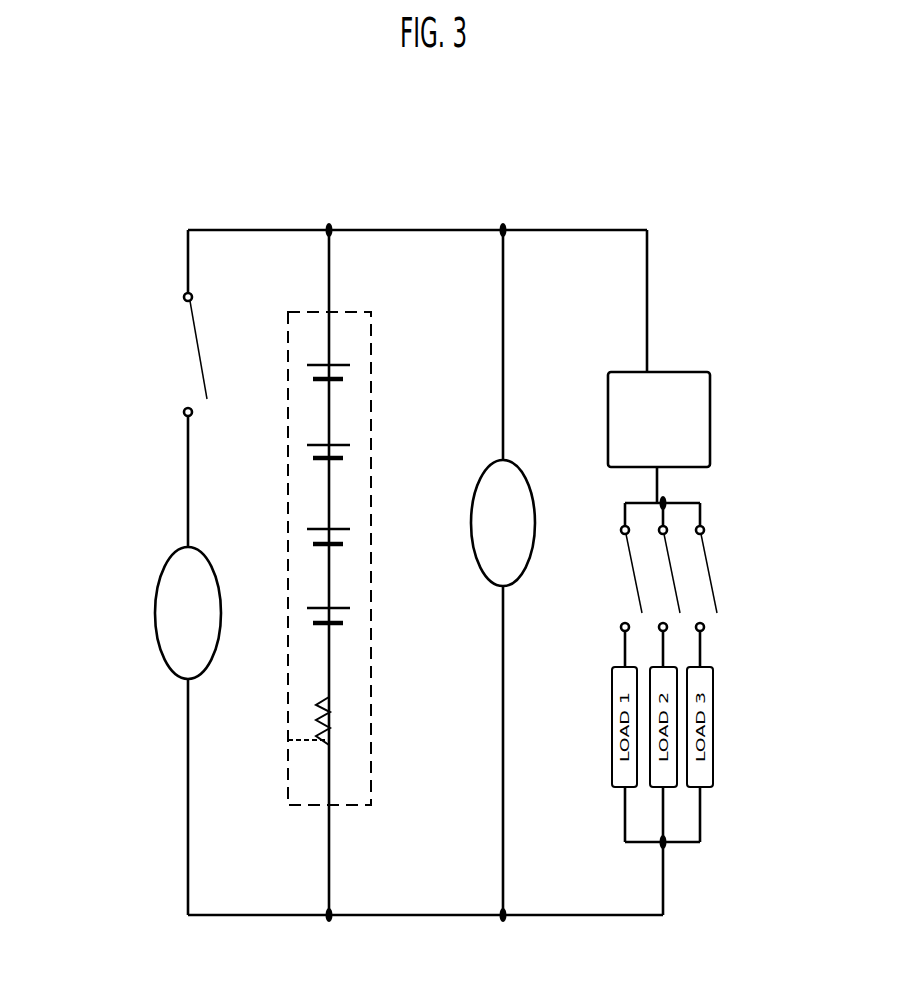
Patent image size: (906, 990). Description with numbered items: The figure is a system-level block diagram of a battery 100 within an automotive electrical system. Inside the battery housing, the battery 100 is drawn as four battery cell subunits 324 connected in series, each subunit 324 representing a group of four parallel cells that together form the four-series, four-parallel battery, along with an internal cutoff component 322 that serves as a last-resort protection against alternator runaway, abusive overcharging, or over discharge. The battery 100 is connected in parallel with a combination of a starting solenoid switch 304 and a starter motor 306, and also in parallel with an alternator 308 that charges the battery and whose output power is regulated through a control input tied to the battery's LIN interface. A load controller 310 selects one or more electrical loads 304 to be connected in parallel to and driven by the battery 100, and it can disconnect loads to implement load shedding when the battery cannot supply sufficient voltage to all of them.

The battery 100 is at (328, 581).
The starting solenoid switch 304 is at (198, 335).
The starter motor 306 is at (155, 602).
The alternator 308 is at (513, 455).
The load controller 310 is at (678, 370).
The cutoff component 322 is at (332, 715).
The battery cell subunit 324 is at (331, 545).